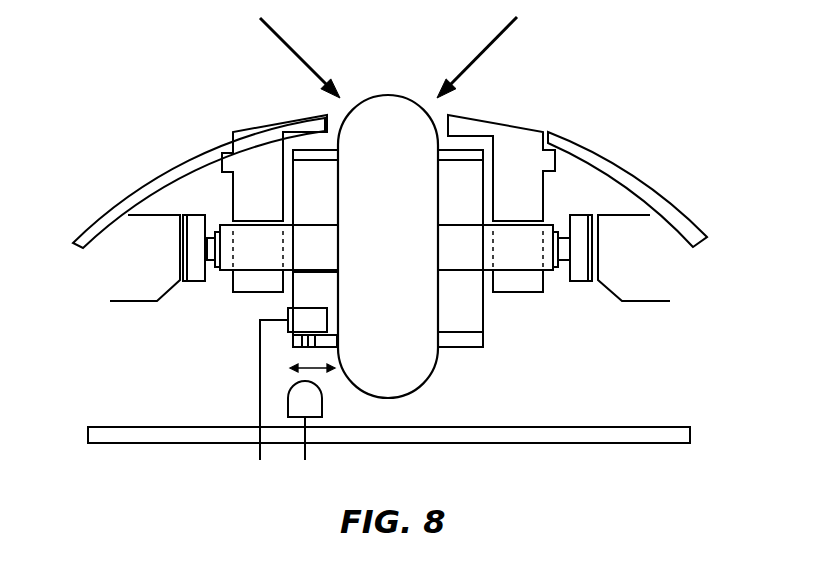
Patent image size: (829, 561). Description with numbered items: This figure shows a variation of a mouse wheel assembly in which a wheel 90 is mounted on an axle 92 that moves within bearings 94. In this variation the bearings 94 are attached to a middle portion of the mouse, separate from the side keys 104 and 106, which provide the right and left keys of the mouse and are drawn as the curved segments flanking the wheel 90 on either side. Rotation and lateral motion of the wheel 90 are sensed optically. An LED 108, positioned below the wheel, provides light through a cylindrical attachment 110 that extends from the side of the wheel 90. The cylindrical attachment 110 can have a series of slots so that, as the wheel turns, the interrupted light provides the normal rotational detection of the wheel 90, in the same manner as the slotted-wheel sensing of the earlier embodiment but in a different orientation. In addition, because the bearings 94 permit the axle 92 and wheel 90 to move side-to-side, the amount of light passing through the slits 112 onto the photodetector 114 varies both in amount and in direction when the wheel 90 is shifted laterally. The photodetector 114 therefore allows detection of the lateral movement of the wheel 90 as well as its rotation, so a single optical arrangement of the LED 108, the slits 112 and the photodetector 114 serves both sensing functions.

The wheel 90 is at (387, 97).
The axle 92 is at (313, 225).
The bearings 94 is at (233, 208).
The side key 104 is at (127, 180).
The side key 106 is at (650, 180).
The LED 108 is at (322, 403).
The cylindrical attachment 110 is at (327, 347).
The slits 112 is at (302, 348).
The photodetector 114 is at (315, 308).